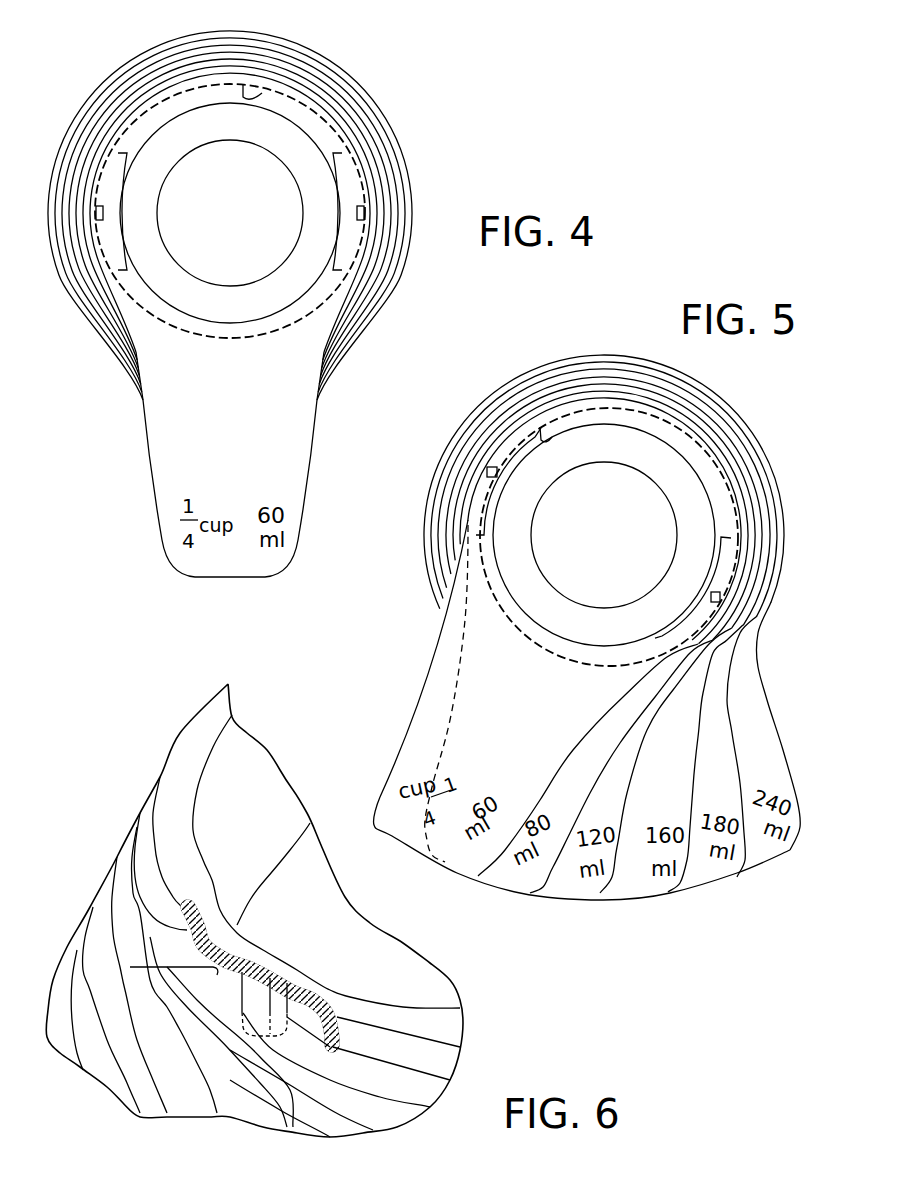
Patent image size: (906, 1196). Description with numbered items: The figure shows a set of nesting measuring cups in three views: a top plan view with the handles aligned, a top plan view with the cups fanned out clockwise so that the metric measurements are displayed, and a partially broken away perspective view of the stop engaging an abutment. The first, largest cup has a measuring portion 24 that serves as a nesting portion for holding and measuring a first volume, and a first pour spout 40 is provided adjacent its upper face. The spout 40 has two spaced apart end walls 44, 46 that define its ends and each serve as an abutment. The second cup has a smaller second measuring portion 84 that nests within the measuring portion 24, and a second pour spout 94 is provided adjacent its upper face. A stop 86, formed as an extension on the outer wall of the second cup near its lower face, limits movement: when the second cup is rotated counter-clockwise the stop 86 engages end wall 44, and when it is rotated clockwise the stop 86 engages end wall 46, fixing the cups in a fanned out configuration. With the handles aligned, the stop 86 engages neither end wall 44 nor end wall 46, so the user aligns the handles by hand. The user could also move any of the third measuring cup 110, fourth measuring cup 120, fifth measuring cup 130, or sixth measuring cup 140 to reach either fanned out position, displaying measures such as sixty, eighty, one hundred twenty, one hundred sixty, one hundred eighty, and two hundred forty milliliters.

In FIG. 4, the measuring portion 24 is at (250, 97).
In FIG. 6, the measuring portion 24 is at (187, 951).
In FIG. 6, the first pour spout 40 is at (112, 897).
In FIG. 4, the end wall 44 is at (102, 250).
In FIG. 6, the end wall 44 is at (283, 1030).
In FIG. 4, the end wall 46 is at (107, 167).
In FIG. 6, the end wall 46 is at (143, 827).
In FIG. 6, the second measuring portion 84 is at (272, 747).
In FIG. 4, the stop 86 is at (93, 214).
In FIG. 5, the stop 86 is at (710, 592).
In FIG. 6, the stop 86 is at (253, 990).
In FIG. 6, the second pour spout 94 is at (350, 997).
In FIG. 5, the third measuring cup 110 is at (562, 885).
In FIG. 5, the fourth measuring cup 120 is at (645, 890).
In FIG. 5, the fifth measuring cup 130 is at (705, 872).
In FIG. 5, the sixth measuring cup 140 is at (768, 850).